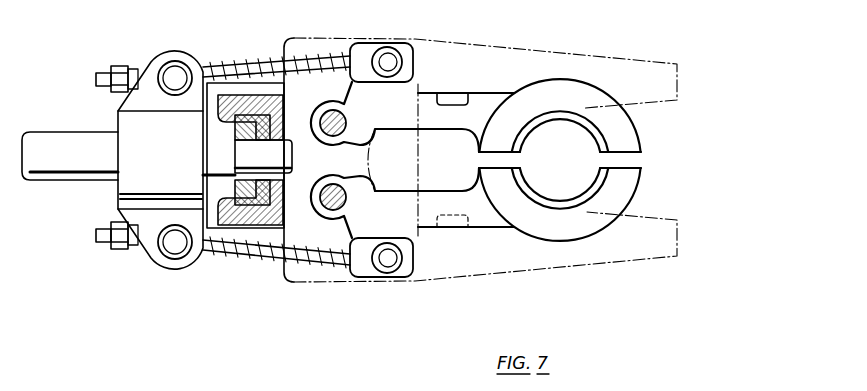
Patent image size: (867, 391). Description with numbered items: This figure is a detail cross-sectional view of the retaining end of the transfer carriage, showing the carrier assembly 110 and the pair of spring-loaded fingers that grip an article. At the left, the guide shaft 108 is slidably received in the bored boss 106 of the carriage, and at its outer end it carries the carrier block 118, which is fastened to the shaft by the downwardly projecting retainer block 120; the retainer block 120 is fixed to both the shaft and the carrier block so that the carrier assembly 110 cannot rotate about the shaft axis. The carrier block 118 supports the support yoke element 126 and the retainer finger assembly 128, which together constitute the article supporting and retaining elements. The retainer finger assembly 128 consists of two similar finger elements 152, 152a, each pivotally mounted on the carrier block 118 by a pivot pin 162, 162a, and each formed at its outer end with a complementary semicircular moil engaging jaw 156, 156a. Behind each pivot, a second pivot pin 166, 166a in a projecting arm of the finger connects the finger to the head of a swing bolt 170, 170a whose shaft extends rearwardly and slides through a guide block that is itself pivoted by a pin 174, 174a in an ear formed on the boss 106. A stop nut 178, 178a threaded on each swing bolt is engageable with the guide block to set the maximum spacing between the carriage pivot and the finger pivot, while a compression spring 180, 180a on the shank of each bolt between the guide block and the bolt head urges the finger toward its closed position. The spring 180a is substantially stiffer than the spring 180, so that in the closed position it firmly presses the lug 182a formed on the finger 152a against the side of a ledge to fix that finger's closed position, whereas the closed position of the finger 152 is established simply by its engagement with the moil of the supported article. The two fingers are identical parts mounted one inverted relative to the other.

The boss 106 is at (127, 127).
The guide shaft 108 is at (38, 182).
The carrier assembly 110 is at (417, 292).
The carrier block 118 is at (218, 198).
The retainer block 120 is at (235, 130).
The support yoke element 126 is at (627, 265).
The retainer finger assembly 128 is at (513, 243).
The finger element 152 is at (478, 228).
The finger element 152a is at (506, 97).
The moil engaging jaw 156 is at (636, 186).
The moil engaging jaw 156a is at (636, 139).
The pivot pin 162 is at (346, 203).
The pivot pin 162a is at (346, 113).
The second pivot pin 166 is at (390, 274).
The second pivot pin 166a is at (387, 62).
The swing bolt 170 is at (257, 262).
The swing bolt 170a is at (313, 62).
The pin 174 is at (175, 250).
The pin 174a is at (176, 76).
The stop nut 178 is at (130, 249).
The stop nut 178a is at (125, 64).
The compression spring 180 is at (210, 256).
The compression spring 180a is at (242, 67).
The lug 182a is at (453, 97).